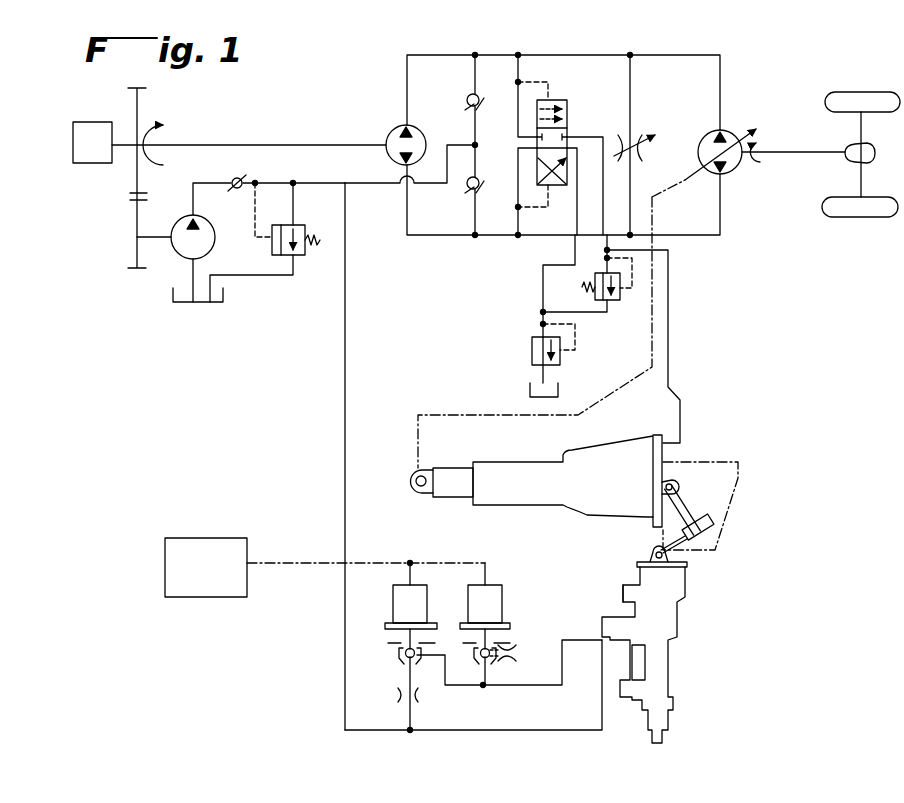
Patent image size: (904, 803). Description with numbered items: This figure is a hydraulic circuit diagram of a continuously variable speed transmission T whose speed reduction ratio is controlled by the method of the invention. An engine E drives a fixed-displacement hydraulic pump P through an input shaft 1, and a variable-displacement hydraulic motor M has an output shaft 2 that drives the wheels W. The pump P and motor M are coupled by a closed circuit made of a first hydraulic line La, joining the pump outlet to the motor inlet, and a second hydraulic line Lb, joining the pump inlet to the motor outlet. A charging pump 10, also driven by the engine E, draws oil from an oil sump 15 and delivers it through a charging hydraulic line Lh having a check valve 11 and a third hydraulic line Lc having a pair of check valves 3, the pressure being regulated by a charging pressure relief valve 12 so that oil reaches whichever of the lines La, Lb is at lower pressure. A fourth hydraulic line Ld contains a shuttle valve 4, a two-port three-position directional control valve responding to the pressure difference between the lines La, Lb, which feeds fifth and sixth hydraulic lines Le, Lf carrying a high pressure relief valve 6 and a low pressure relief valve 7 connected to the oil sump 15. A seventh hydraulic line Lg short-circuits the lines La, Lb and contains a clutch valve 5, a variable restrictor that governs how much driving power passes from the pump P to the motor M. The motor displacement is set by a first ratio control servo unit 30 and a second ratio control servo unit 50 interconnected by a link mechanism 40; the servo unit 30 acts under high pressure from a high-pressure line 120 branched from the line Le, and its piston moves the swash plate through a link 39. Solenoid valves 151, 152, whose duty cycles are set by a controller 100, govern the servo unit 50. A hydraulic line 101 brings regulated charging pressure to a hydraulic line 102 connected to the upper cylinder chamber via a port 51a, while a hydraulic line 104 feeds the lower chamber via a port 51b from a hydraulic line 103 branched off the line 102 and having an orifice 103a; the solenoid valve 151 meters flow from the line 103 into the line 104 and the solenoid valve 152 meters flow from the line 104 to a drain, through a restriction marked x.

The engine E is at (72, 147).
The input shaft 1 is at (292, 140).
The hydraulic pump P is at (392, 132).
The continuously variable speed transmission T is at (698, 44).
The hydraulic motor M is at (730, 130).
The output shaft 2 is at (808, 146).
The wheels W is at (881, 84).
The second hydraulic line Lb is at (447, 52).
The first hydraulic line La is at (436, 232).
The third hydraulic line Lc is at (480, 127).
The fourth hydraulic line Ld is at (530, 72).
The fifth hydraulic line Le is at (591, 137).
The sixth hydraulic line Lf is at (545, 279).
The seventh hydraulic line Lg is at (632, 91).
The charging hydraulic line Lh is at (378, 190).
The check valves 3 is at (465, 97).
The shuttle valve 4 is at (567, 100).
The clutch valve 5 is at (638, 151).
The high pressure relief valve 6 is at (620, 292).
The low pressure relief valve 7 is at (560, 360).
The charging pump 10 is at (213, 245).
The check valve 11 is at (234, 190).
The charging pressure relief valve 12 is at (298, 222).
The oil sump 15 is at (225, 296).
The first ratio control servo unit 30 is at (542, 516).
The link 39 is at (670, 314).
The link mechanism 40 is at (695, 512).
The second ratio control servo unit 50 is at (624, 570).
The port 51a is at (619, 604).
The port 51b is at (628, 645).
The controller 100 is at (228, 538).
The hydraulic line 101 is at (347, 290).
The hydraulic line 102 is at (540, 734).
The hydraulic line 103 is at (409, 718).
The orifice 103a is at (420, 695).
The hydraulic line 104 is at (533, 686).
The high-pressure line 120 is at (668, 345).
The solenoid valve 151 is at (430, 596).
The solenoid valve 152 is at (503, 596).
The throttle x is at (510, 654).